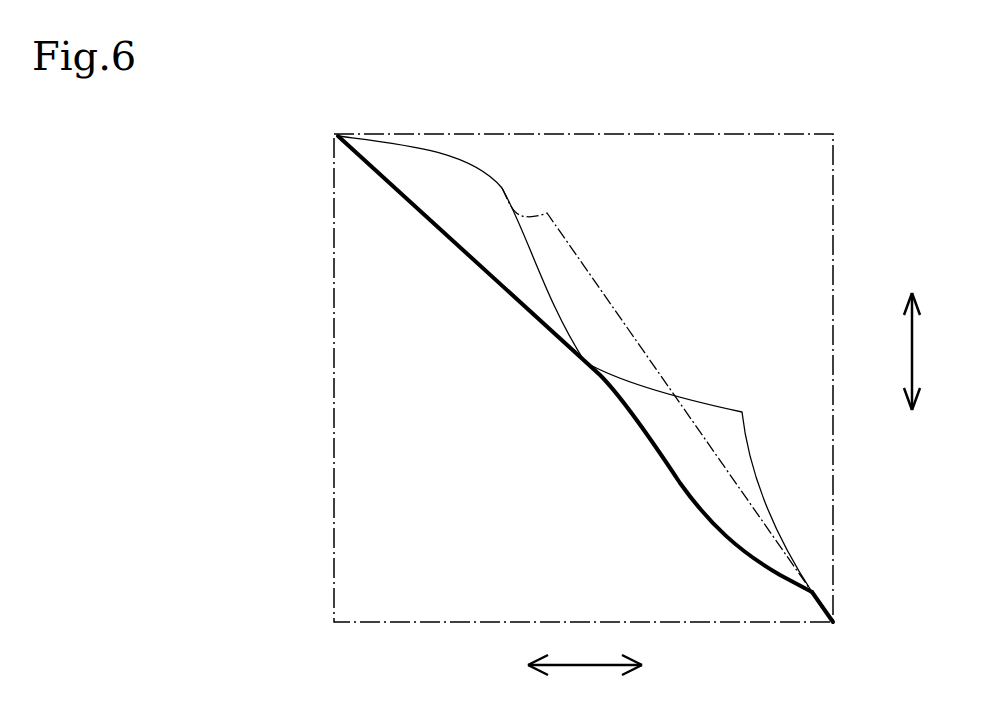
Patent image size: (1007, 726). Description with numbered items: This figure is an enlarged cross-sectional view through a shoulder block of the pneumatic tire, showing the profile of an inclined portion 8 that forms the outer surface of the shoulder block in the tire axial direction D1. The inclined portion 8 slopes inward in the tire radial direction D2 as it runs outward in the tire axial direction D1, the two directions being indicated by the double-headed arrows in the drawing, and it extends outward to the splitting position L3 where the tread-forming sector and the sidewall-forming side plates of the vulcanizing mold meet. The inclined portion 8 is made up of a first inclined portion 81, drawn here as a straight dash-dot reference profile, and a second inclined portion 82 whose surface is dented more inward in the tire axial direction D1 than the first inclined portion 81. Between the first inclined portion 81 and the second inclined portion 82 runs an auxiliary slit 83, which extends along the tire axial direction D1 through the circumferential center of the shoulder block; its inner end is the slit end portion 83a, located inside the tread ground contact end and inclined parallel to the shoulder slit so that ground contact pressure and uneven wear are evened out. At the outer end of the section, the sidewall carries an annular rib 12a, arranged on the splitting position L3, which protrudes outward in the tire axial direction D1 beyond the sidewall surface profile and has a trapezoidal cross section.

The inclined portion 8 is at (688, 178).
The first inclined portion 81 is at (620, 317).
The second inclined portion 82 is at (713, 402).
The auxiliary slit 83 is at (461, 216).
The slit end portion 83a is at (350, 140).
The splitting position L3 is at (618, 415).
The annular rib 12a is at (817, 612).
The tire axial direction D1 is at (585, 673).
The tire radial direction D2 is at (923, 351).